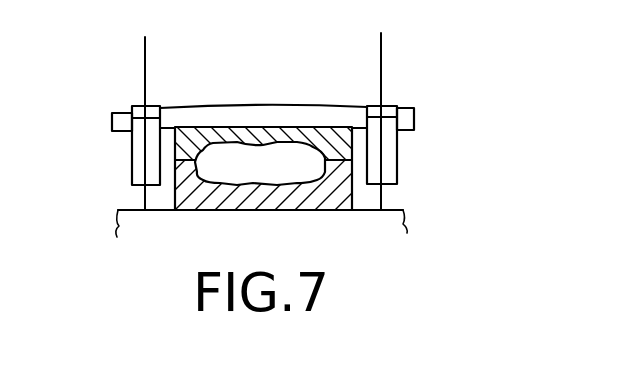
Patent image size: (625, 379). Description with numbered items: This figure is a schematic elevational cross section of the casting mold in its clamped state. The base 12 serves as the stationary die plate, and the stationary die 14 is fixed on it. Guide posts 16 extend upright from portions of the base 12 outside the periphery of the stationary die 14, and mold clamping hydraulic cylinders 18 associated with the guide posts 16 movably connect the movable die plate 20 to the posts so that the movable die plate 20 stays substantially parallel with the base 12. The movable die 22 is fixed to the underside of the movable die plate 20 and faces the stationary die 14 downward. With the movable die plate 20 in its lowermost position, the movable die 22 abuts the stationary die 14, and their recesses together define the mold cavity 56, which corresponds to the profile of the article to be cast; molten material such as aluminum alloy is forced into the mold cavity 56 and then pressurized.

The base 12 is at (405, 222).
The stationary die 14 is at (277, 198).
The guide posts 16 is at (147, 61).
The mold clamping hydraulic cylinders 18 is at (130, 96).
The movable die plate 20 is at (310, 112).
The movable die 22 is at (245, 135).
The mold cavity 56 is at (233, 176).